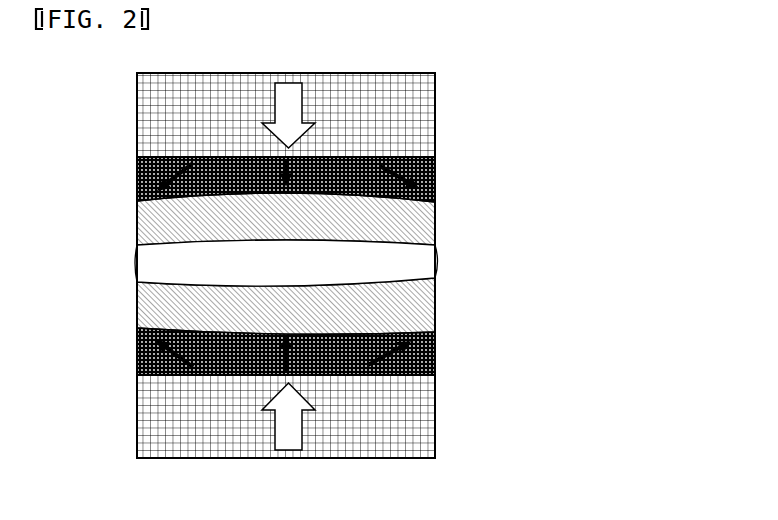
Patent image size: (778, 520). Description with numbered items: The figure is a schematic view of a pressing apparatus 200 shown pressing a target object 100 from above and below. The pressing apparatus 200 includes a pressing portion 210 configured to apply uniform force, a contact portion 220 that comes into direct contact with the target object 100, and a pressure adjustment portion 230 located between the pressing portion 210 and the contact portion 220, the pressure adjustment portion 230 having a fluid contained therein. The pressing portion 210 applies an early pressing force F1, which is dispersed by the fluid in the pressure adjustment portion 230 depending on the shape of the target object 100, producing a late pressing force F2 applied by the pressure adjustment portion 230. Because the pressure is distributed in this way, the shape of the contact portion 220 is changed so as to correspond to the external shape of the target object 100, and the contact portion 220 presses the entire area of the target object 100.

The target object 100 is at (415, 257).
The pressing apparatus 200 is at (410, 265).
The pressing portion 210 is at (412, 131).
The contact portion 220 is at (415, 218).
The pressure adjustment portion 230 is at (437, 177).
The early pressing force F1 is at (275, 105).
The late pressing force F2 is at (165, 175).